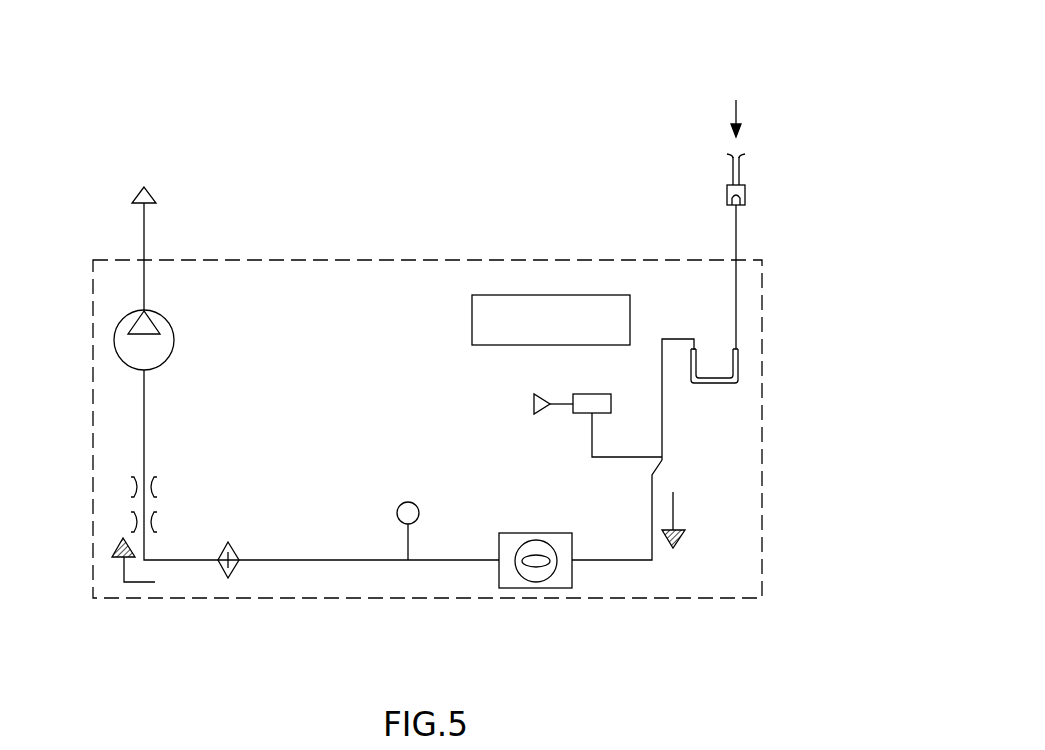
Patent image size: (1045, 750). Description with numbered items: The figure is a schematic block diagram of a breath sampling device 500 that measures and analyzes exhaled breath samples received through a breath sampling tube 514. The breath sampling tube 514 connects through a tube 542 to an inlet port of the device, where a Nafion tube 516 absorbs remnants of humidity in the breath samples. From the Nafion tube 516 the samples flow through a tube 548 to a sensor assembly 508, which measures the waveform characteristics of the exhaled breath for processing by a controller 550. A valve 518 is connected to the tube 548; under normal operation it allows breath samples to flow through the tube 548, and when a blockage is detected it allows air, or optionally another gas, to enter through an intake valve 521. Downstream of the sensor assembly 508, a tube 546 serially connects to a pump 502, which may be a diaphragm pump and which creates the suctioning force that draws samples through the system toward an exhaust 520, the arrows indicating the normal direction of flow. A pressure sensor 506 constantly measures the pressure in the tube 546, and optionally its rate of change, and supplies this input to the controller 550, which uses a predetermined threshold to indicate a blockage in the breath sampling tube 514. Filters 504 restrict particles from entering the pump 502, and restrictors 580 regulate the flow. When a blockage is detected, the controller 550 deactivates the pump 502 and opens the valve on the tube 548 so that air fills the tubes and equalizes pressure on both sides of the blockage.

The breath sampling device 500 is at (593, 51).
The pump 502 is at (114, 340).
The filters 504 is at (238, 571).
The pressure sensor 506 is at (400, 523).
The sensor assembly 508 is at (573, 575).
The breath sampling tube 514 is at (746, 195).
The Nafion tube 516 is at (740, 362).
The valve 518 is at (584, 394).
The exhaust 520 is at (157, 196).
The intake valve 521 is at (534, 404).
The tube 542 is at (738, 304).
The tube 546 is at (172, 562).
The tube 548 is at (662, 431).
The controller 550 is at (561, 295).
The restrictors 580 is at (133, 482).